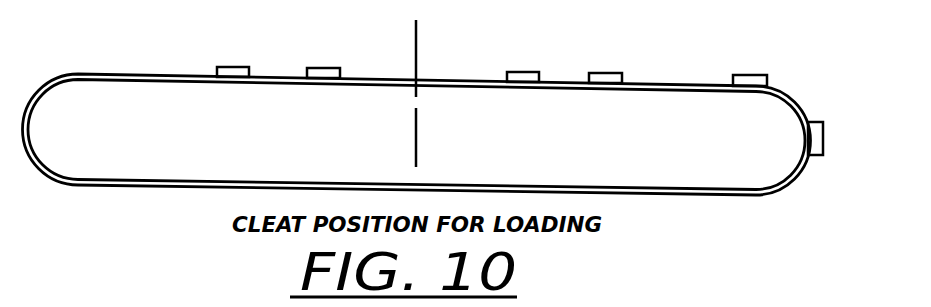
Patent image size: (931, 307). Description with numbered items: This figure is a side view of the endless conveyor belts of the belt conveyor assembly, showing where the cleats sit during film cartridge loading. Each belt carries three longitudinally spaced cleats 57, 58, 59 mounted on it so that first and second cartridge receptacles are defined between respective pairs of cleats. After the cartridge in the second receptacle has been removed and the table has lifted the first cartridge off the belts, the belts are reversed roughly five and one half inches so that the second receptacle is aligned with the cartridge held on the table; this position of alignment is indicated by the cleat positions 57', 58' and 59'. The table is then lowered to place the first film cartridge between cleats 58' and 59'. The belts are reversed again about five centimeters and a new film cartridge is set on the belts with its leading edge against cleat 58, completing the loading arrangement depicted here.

The cleat 57 is at (808, 106).
The cleat position 57' is at (740, 50).
The cleat 58 is at (596, 48).
The cleat position 58' is at (503, 48).
The cleat 59 is at (310, 46).
The cleat position 59' is at (219, 42).